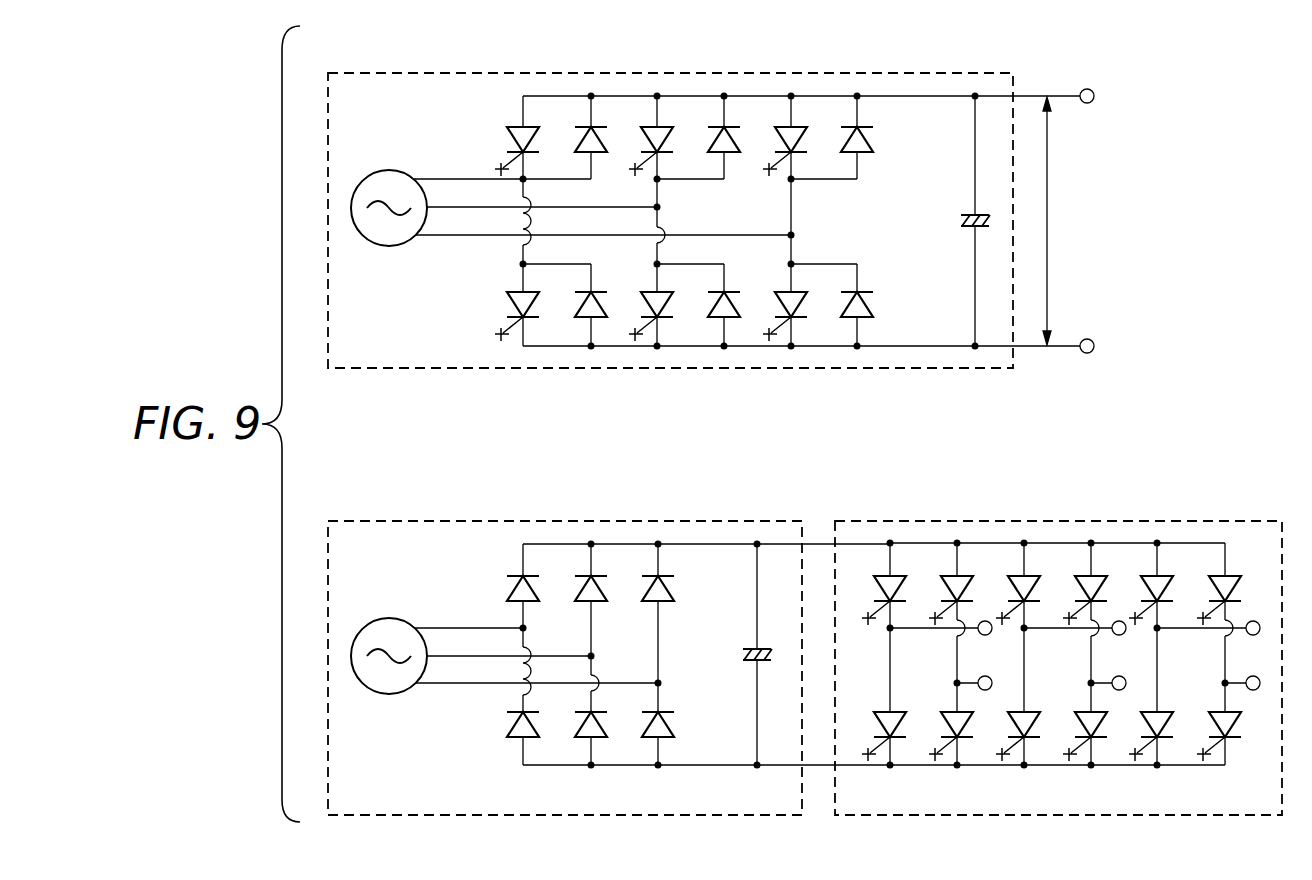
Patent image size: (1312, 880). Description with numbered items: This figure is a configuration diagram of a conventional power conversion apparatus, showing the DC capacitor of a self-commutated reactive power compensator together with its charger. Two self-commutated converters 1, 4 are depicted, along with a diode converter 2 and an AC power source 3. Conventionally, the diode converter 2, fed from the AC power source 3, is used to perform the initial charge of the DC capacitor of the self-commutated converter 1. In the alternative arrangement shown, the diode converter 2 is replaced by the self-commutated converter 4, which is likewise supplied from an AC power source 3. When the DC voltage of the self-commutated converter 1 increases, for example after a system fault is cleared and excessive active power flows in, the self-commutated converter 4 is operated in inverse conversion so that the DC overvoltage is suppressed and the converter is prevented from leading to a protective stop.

The self-commutated converter 1 is at (1060, 521).
The diode converter 2 is at (606, 520).
The AC power source 3 is at (393, 171).
The self-commutated converter 4 is at (674, 73).